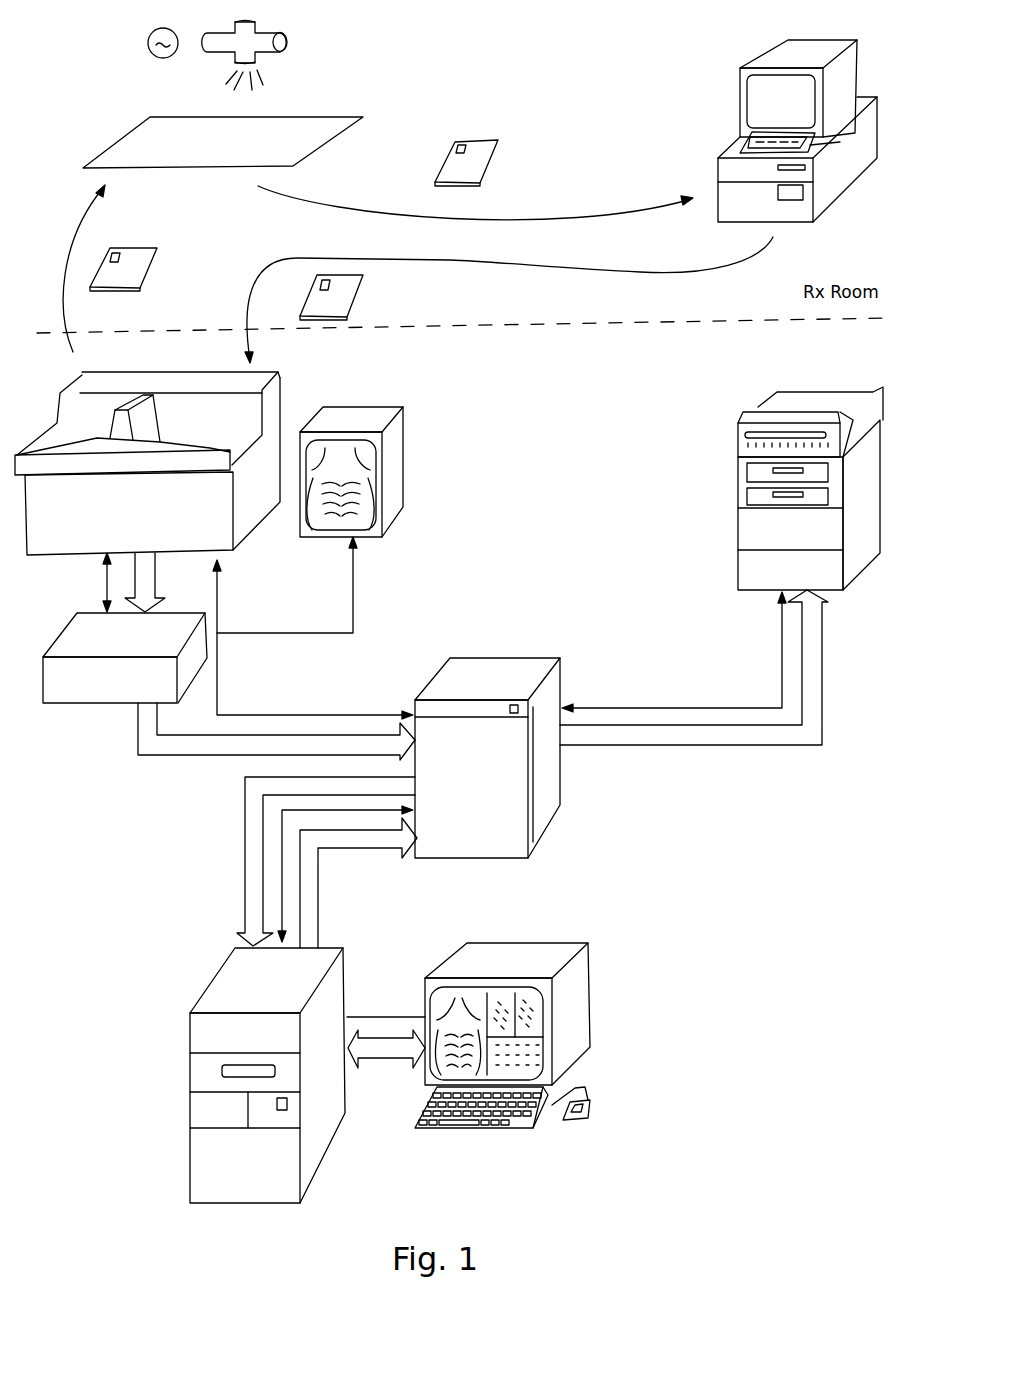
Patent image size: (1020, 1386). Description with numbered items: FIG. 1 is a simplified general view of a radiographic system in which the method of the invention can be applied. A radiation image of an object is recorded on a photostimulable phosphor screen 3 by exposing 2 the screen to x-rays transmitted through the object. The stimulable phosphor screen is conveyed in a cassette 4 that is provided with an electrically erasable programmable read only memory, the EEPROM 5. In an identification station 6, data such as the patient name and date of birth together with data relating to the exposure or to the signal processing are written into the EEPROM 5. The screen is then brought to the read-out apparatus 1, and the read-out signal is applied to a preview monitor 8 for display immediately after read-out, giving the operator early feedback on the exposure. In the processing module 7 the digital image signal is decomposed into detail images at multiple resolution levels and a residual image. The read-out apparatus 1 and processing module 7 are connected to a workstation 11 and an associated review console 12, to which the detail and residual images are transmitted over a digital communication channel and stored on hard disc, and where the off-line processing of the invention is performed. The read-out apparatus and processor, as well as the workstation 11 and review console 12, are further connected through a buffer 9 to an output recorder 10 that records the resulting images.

The read-out apparatus 1 is at (235, 405).
The exposing 2 is at (260, 38).
The photostimulable phosphor screen 3 is at (313, 127).
The cassette 4 is at (485, 141).
The electrically erasable programmable read only memory (EEPROM) 5 is at (461, 144).
The identification station 6 is at (762, 112).
The processing module 7 is at (165, 625).
The preview monitor 8 is at (393, 470).
The buffer 9 is at (490, 667).
The output recorder 10 is at (750, 525).
The workstation 11 is at (313, 962).
The review console 12 is at (507, 955).